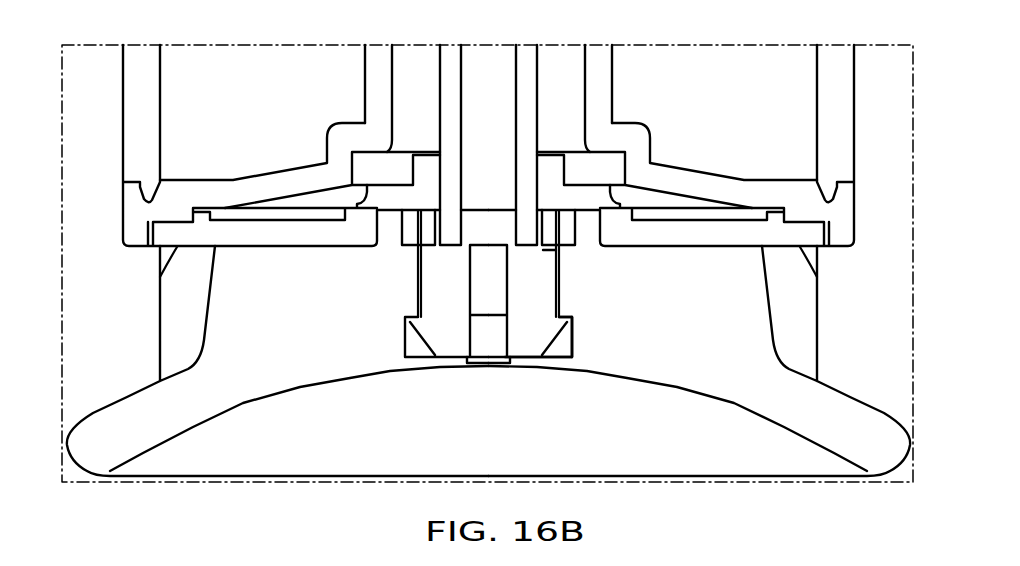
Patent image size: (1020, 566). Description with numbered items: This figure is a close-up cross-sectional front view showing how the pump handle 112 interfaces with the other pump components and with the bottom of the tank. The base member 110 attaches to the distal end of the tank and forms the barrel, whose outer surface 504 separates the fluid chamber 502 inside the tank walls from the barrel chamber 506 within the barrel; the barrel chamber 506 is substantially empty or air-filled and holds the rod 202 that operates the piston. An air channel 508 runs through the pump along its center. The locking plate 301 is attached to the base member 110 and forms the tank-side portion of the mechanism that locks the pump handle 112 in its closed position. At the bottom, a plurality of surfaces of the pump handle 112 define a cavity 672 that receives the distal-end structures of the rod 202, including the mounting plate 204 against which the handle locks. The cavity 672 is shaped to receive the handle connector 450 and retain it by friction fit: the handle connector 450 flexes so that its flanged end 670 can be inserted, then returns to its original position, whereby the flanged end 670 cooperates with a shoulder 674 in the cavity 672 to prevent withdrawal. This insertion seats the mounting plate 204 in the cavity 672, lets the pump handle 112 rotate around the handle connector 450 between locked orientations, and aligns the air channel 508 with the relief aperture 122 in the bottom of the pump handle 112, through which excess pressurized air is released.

The base member 110 is at (122, 199).
The pump handle 112 is at (837, 391).
The relief aperture 122 is at (487, 372).
The rod 202 is at (440, 115).
The mounting plate 204 is at (571, 233).
The locking plate 301 is at (163, 272).
The handle connector 450 is at (419, 273).
The fluid chamber 502 is at (567, 125).
The outer surface of the barrel 504 is at (363, 80).
The barrel chamber 506 is at (565, 88).
The air channel 508 is at (488, 69).
The flanged end 670 is at (408, 338).
The cavity 672 is at (567, 346).
The shoulder 674 is at (597, 308).